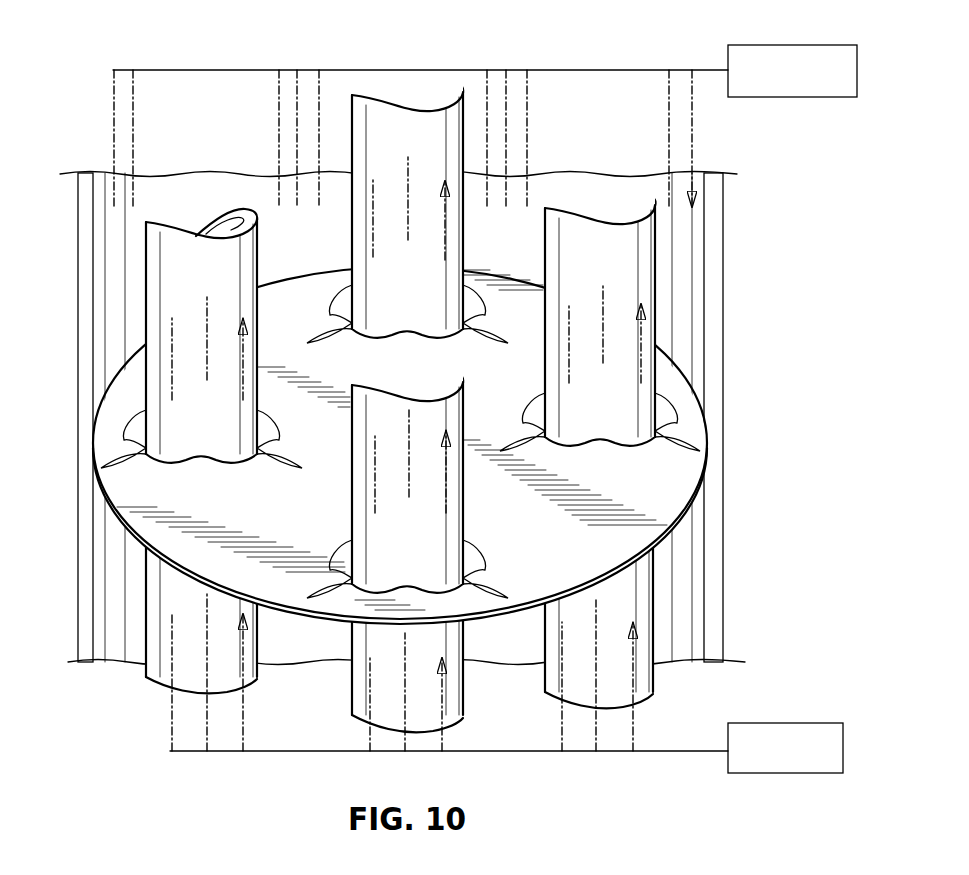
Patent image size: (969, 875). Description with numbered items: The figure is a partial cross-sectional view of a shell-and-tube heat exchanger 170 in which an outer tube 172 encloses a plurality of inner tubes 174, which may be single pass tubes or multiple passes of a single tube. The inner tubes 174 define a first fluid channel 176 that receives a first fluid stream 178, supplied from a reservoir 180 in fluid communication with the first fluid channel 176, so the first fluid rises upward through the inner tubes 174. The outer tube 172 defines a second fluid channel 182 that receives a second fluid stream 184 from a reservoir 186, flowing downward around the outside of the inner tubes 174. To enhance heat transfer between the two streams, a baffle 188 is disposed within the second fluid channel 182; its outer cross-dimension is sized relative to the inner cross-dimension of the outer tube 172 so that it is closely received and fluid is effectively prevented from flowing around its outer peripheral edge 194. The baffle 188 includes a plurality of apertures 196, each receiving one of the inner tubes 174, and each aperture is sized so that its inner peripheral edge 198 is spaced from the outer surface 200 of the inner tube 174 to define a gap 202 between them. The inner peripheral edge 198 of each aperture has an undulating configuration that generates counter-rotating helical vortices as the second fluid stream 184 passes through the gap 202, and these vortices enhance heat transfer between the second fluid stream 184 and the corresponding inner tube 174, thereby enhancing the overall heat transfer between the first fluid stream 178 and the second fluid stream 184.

The shell-and-tube heat exchanger 170 is at (448, 391).
The outer tube 172 is at (76, 238).
The inner tubes 174 is at (400, 332).
The first fluid channel 176 is at (238, 218).
The first fluid stream 178 is at (242, 697).
The reservoir 180 is at (783, 723).
The second fluid channel 182 is at (706, 280).
The second fluid stream 184 is at (133, 148).
The reservoir 186 is at (803, 45).
The baffle 188 is at (433, 445).
The outer peripheral edge 194 is at (665, 540).
The apertures 196 is at (262, 436).
The inner peripheral edge 198 is at (204, 465).
The outer surface 200 is at (352, 140).
The gap 202 is at (128, 412).